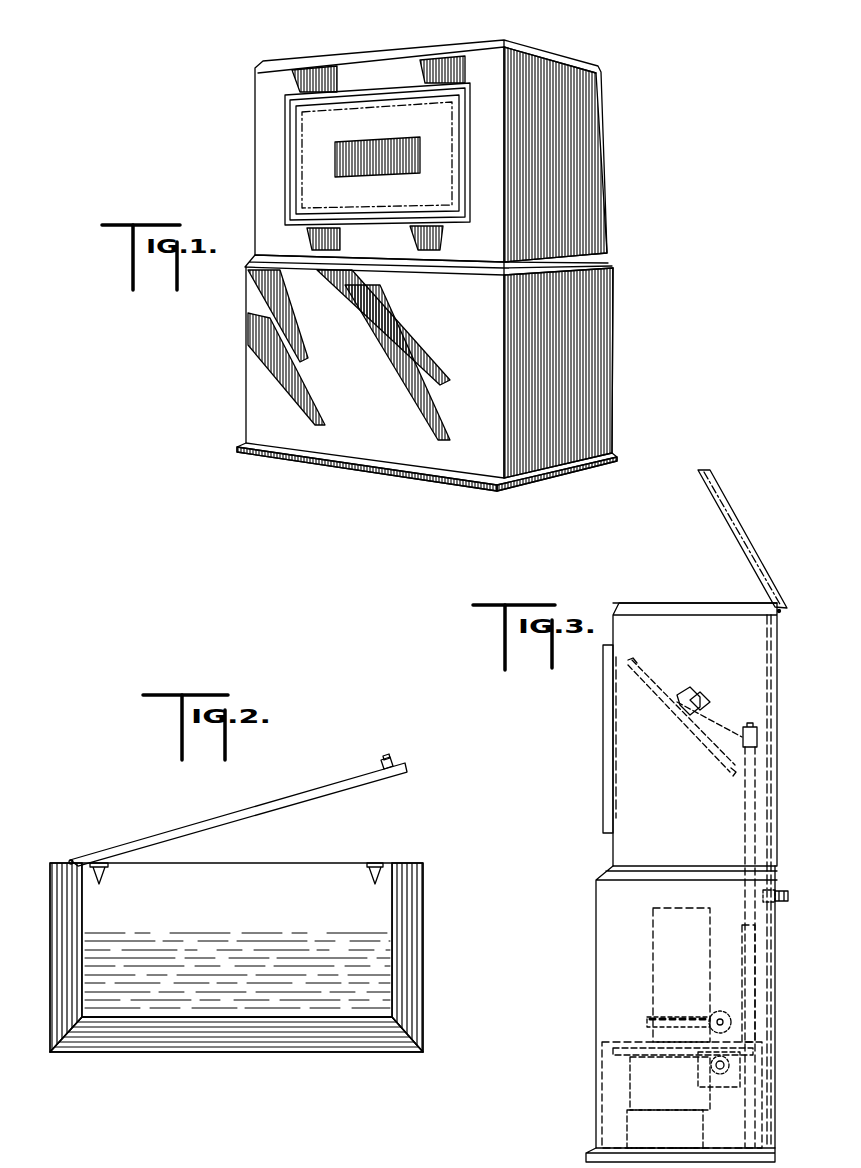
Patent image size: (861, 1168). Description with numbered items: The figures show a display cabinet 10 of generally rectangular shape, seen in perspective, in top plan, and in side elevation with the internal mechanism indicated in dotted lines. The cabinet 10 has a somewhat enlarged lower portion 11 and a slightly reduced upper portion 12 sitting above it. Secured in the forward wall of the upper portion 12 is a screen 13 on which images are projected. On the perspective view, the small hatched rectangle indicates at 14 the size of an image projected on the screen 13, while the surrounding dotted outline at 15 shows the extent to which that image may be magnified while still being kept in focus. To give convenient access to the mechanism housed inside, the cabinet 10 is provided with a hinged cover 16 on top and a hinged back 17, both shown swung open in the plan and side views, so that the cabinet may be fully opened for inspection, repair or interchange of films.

In FIG. 1, the cabinet 10 is at (624, 338).
In FIG. 2, the cabinet 10 is at (434, 996).
In FIG. 3, the cabinet 10 is at (785, 966).
In FIG. 1, the lower portion 11 is at (255, 390).
In FIG. 2, the lower portion 11 is at (420, 919).
In FIG. 3, the lower portion 11 is at (773, 1027).
In FIG. 1, the upper portion 12 is at (592, 157).
In FIG. 2, the upper portion 12 is at (405, 903).
In FIG. 3, the upper portion 12 is at (760, 688).
In FIG. 1, the screen 13 is at (412, 115).
In FIG. 2, the screen 13 is at (245, 1042).
In FIG. 3, the screen 13 is at (613, 745).
In FIG. 1, the size of projected image 14 is at (363, 138).
In FIG. 1, the extent of magnified image 15 is at (305, 142).
In FIG. 2, the hinged cover 16 is at (378, 962).
In FIG. 3, the hinged cover 16 is at (655, 603).
In FIG. 2, the hinged back 17 is at (272, 798).
In FIG. 3, the hinged back 17 is at (777, 838).